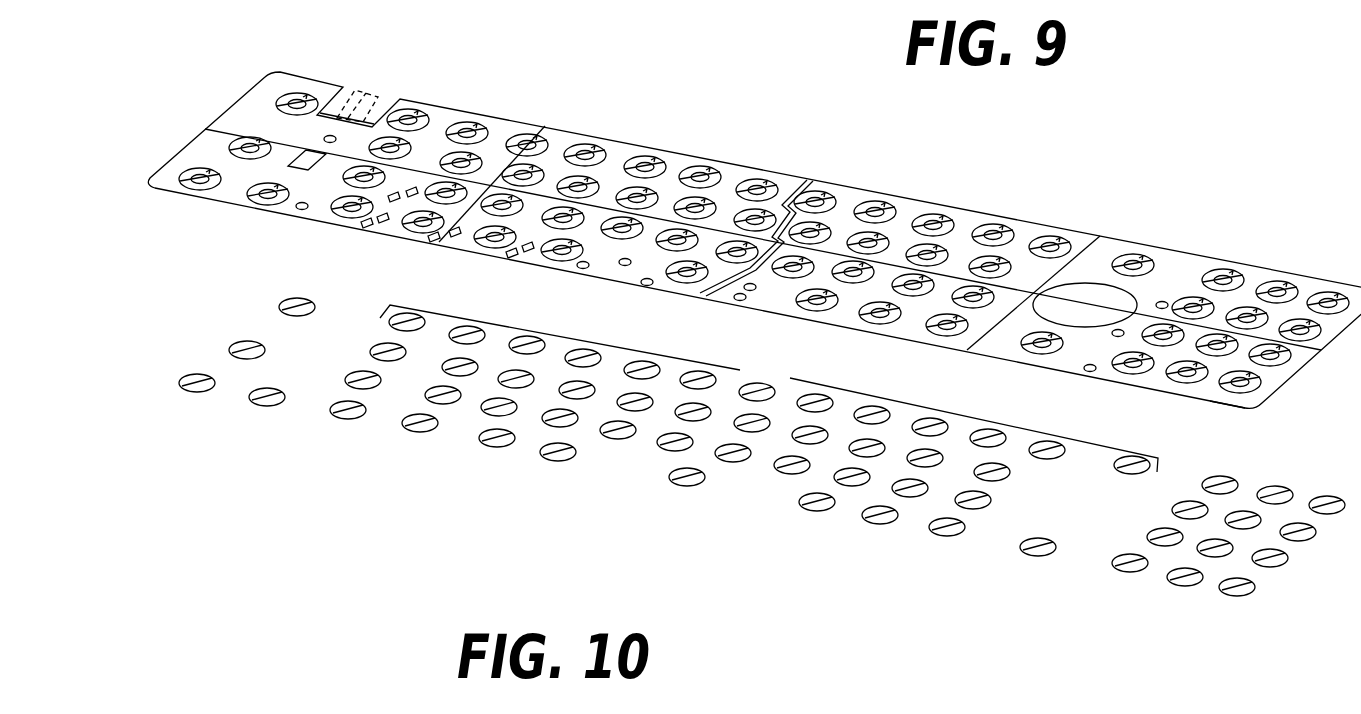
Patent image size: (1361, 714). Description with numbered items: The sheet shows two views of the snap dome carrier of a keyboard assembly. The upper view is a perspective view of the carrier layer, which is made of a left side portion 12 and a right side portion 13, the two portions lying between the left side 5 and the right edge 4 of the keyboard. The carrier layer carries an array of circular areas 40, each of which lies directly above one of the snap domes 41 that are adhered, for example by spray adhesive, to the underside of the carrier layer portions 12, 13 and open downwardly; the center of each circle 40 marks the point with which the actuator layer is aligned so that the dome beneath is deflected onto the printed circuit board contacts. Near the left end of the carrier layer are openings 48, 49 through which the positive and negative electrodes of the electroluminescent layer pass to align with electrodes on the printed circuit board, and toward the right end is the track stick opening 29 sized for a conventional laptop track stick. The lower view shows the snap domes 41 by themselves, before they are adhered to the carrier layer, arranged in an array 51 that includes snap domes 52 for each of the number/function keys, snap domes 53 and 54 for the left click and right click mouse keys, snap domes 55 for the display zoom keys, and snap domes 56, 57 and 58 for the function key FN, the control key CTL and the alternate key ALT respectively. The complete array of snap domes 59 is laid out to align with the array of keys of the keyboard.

In FIG. 9, the right edge 4 is at (1303, 373).
In FIG. 9, the left side 5 is at (222, 113).
In FIG. 9, the left side portion 12 is at (512, 116).
In FIG. 9, the right side portion 13 is at (912, 342).
In FIG. 9, the track stick opening 29 is at (1100, 316).
In FIG. 9, the circular areas 40 is at (188, 173).
In FIG. 10, the snap domes 41 is at (930, 535).
In FIG. 9, the opening 48 is at (356, 94).
In FIG. 9, the opening 49 is at (380, 102).
In FIG. 10, the array 51 is at (1352, 502).
In FIG. 10, the snap domes 52 is at (1242, 608).
In FIG. 10, the snap dome 53 is at (282, 307).
In FIG. 10, the snap dome 54 is at (160, 405).
In FIG. 10, the snap domes 55 is at (257, 410).
In FIG. 10, the snap dome 56 is at (348, 428).
In FIG. 10, the snap dome 57 is at (420, 437).
In FIG. 10, the snap dome 58 is at (503, 446).
In FIG. 10, the array of snap domes 59 is at (769, 388).